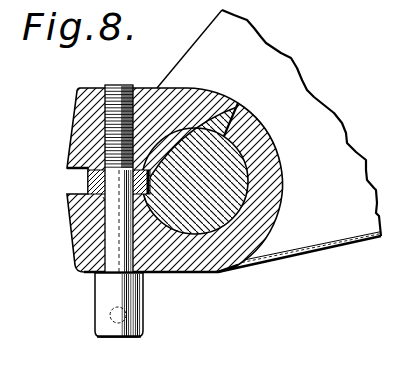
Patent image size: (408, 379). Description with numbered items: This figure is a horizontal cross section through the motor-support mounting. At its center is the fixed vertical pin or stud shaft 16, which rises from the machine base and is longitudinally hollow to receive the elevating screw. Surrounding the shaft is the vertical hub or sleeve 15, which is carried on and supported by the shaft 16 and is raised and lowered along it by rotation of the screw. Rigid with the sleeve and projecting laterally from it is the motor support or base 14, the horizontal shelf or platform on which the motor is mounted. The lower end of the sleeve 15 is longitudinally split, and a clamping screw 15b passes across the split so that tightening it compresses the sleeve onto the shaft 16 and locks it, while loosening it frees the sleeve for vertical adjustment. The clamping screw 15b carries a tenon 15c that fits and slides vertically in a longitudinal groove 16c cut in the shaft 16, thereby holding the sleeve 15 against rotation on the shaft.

The motor support or base 14 is at (345, 222).
The vertical hub or sleeve 15 is at (254, 233).
The clamping screw 15b is at (103, 300).
The tenon 15c is at (85, 181).
The fixed vertical pin or stud shaft 16 is at (198, 215).
The longitudinal groove 16c is at (266, 71).